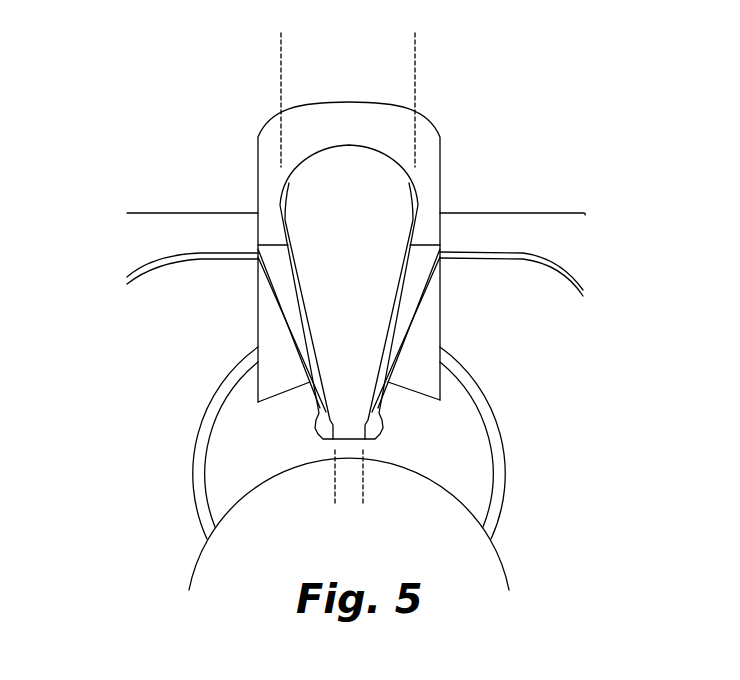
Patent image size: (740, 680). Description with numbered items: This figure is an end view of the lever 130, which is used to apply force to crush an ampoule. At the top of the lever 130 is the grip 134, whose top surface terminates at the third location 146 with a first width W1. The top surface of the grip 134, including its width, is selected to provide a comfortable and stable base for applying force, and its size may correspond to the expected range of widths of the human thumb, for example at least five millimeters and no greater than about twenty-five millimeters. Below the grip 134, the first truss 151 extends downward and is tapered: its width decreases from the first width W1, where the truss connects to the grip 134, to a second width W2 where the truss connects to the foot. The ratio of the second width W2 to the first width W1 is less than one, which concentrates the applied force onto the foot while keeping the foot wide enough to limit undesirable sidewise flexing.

The lever 130 is at (443, 116).
The grip 134 is at (307, 150).
The third location 146 is at (390, 153).
The first truss 151 is at (364, 283).
The first width W1 is at (415, 47).
The second width W2 is at (383, 493).